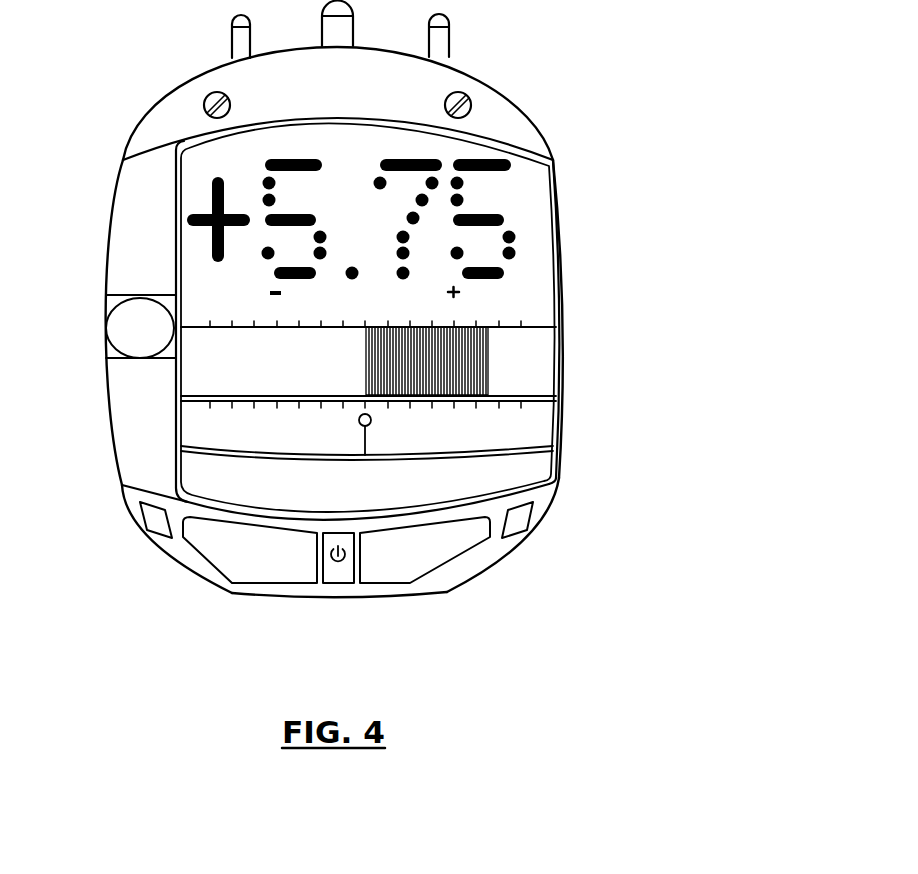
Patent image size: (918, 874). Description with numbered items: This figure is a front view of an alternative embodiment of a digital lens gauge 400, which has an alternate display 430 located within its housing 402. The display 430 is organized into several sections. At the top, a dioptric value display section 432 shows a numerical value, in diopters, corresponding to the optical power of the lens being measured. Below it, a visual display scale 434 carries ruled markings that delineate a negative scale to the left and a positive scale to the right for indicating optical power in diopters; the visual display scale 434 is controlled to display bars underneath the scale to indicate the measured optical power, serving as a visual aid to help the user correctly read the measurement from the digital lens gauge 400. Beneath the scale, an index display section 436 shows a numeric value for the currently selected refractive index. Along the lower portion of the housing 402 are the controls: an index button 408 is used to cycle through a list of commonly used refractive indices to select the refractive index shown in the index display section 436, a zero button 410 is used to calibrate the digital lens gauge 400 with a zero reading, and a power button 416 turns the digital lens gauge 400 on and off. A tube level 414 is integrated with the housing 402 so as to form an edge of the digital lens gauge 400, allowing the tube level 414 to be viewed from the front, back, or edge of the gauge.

The digital lens gauge 400 is at (506, 66).
The housing 402 is at (527, 125).
The tube level 414 is at (108, 275).
The display 430 is at (537, 222).
The dioptric value display section 432 is at (538, 258).
The visual display scale 434 is at (550, 356).
The index display section 436 is at (530, 470).
The zero button 410 is at (270, 573).
The power button 416 is at (338, 572).
The index button 408 is at (463, 548).